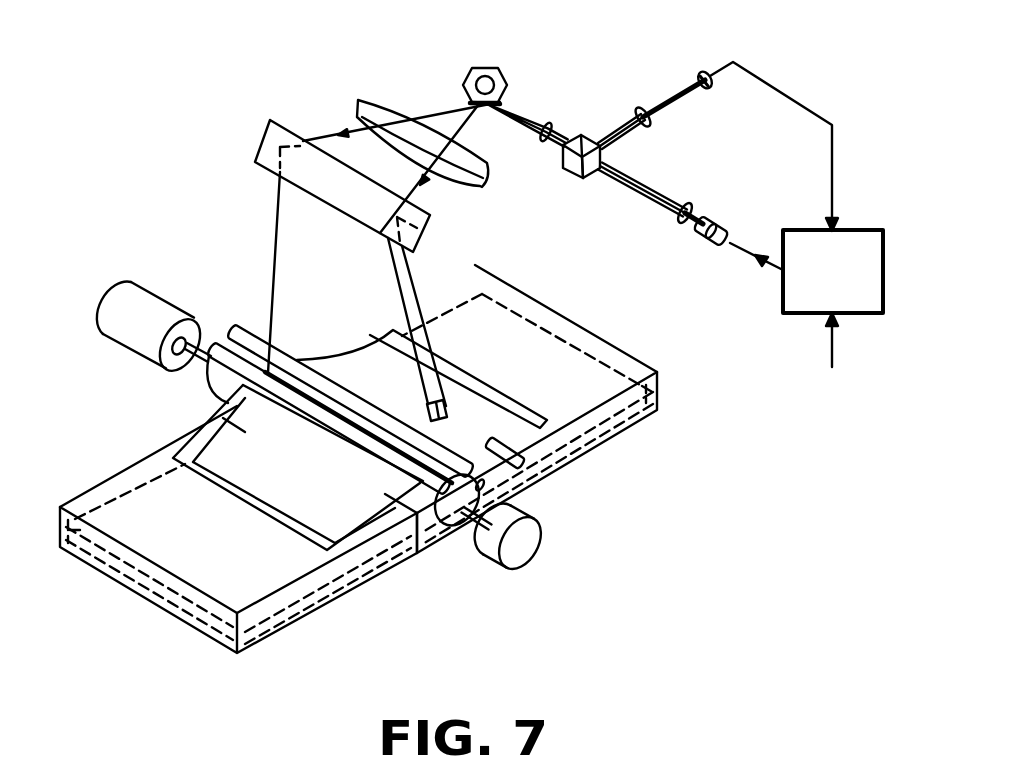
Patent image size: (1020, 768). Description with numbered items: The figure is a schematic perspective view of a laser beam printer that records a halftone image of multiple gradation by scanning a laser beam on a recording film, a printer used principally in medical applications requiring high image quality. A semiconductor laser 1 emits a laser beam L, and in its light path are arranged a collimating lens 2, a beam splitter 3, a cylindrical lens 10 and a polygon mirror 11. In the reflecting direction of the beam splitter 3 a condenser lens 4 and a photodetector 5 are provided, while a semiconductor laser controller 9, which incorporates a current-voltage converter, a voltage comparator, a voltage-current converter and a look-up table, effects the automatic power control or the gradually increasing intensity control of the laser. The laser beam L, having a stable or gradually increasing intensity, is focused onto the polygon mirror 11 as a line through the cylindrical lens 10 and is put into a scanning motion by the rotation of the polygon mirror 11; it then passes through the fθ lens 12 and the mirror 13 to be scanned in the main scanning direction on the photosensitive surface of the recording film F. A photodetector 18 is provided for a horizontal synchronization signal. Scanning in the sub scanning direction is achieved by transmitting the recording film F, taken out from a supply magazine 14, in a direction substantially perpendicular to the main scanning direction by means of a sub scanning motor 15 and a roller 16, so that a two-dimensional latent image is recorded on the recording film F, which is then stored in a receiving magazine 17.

The semiconductor laser 1 is at (718, 247).
The collimating lens 2 is at (677, 228).
The beam splitter 3 is at (578, 178).
The condenser lens 4 is at (640, 108).
The photodetector 5 is at (703, 71).
The semiconductor laser controller 9 is at (858, 230).
The cylindrical lens 10 is at (540, 145).
The polygon mirror 11 is at (500, 71).
The fθ lens 12 is at (381, 102).
The mirror 13 is at (262, 135).
The supply magazine 14 is at (658, 387).
The sub scanning motor 15 is at (153, 290).
The roller 16 is at (455, 530).
The receiving magazine 17 is at (331, 606).
The photodetector 18 is at (523, 462).
The recording film F is at (220, 413).
The laser beam L is at (633, 193).